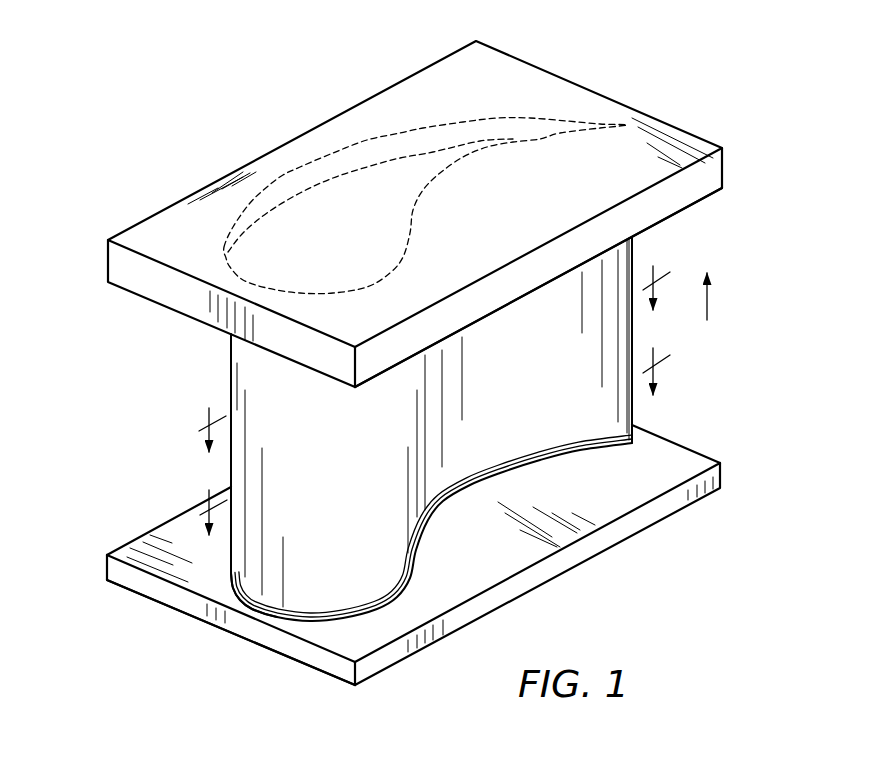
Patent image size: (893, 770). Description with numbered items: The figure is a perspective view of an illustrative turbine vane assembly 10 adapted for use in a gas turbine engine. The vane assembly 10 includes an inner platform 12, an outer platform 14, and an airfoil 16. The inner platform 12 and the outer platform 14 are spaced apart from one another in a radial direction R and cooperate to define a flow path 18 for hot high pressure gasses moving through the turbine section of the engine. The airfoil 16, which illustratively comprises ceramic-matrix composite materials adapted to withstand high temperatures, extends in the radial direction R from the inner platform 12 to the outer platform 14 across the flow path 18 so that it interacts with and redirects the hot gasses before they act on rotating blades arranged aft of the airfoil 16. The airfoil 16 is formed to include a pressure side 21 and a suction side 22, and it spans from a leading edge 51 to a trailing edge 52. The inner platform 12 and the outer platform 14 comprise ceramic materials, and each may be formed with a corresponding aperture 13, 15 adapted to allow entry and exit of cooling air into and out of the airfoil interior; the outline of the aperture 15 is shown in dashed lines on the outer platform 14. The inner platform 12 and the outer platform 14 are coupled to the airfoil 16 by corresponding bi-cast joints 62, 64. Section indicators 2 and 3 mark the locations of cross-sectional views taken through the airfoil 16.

The turbine vane assembly 10 is at (133, 176).
The inner platform 12 is at (664, 529).
The aperture 13 is at (291, 661).
The outer platform 14 is at (547, 103).
The aperture 15 is at (425, 125).
The airfoil 16 is at (148, 430).
The flow path 18 is at (185, 485).
The pressure side 21 is at (524, 433).
The suction side 22 is at (228, 378).
The leading edge 51 is at (270, 573).
The trailing edge 52 is at (634, 398).
The bi-cast joint 62 is at (441, 516).
The bi-cast joint 64 is at (491, 320).
The section line 2 is at (434, 345).
The section line 3 is at (435, 428).
The radial direction R is at (708, 302).